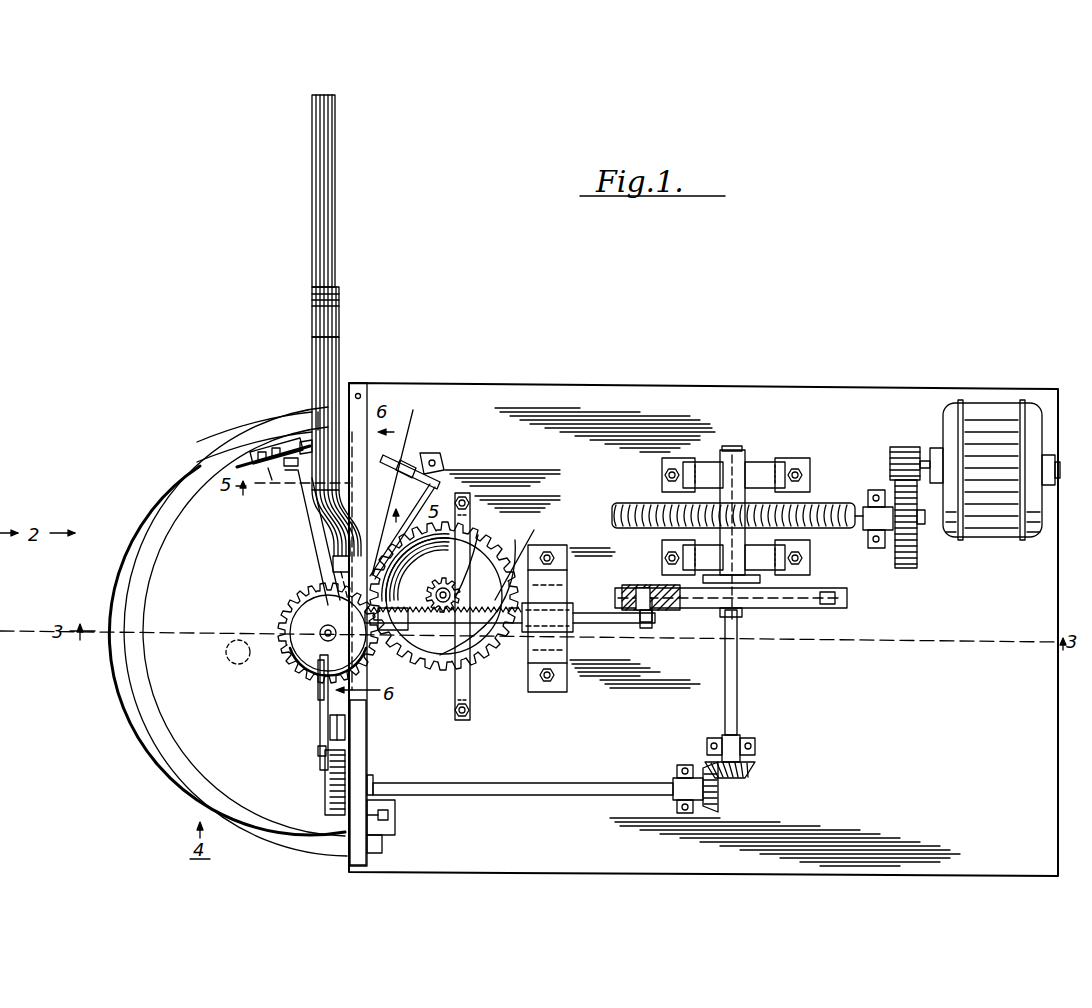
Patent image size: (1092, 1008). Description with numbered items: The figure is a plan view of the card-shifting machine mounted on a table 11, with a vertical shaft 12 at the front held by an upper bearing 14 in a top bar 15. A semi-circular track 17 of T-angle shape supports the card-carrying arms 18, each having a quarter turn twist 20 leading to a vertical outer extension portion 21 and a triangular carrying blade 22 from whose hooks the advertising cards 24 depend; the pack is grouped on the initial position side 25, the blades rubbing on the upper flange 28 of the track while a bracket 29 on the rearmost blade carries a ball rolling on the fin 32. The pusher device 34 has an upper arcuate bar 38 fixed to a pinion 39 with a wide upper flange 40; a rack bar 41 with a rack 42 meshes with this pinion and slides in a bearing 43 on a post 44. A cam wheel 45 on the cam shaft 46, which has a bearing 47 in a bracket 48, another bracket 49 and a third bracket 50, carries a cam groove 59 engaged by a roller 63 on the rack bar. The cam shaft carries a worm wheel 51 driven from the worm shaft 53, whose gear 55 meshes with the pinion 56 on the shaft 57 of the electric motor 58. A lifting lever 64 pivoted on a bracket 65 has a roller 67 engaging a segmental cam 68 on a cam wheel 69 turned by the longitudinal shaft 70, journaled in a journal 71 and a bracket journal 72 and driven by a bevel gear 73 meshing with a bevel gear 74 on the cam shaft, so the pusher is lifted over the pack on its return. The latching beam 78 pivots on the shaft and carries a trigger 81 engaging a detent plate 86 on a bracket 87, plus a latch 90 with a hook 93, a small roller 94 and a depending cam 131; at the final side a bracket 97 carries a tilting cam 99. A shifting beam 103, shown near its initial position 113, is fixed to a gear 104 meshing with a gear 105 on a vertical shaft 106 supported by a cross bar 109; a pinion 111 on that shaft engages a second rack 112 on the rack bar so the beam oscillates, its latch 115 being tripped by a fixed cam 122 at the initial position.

The table 11 is at (556, 400).
The vertical shaft 12 is at (322, 654).
The upper bearing 14 is at (320, 642).
The top bar 15 is at (358, 766).
The semi-circular track 17 is at (170, 780).
The arms 18 is at (342, 362).
The quarter turn twist 20 is at (318, 560).
The outer extension portion 21 is at (318, 374).
The triangular carrying blade 22 is at (334, 322).
The advertising cards 24 is at (332, 282).
The initial position side 25 is at (288, 408).
The upper flange 28 is at (148, 738).
The bracket 29 is at (346, 424).
The fin 32 is at (200, 805).
The pusher device 34 is at (404, 648).
The upper arcuate bar 38 is at (380, 590).
The pinion 39 is at (238, 652).
The wide upper flange 40 is at (288, 612).
The rack bar 41 is at (510, 615).
The rack 42 is at (394, 632).
The bearing 43 is at (553, 617).
The post 44 is at (556, 646).
The cam wheel 45 is at (780, 606).
The cam shaft 46 is at (736, 716).
The bearing 47 is at (800, 562).
The bracket 48 is at (705, 560).
The bracket 49 is at (740, 480).
The third bracket 50 is at (757, 752).
The worm wheel 51 is at (640, 512).
The worm shaft 53 is at (868, 512).
The gear 55 is at (917, 560).
The pinion 56 is at (900, 455).
The shaft 57 is at (925, 460).
The electric motor 58 is at (990, 396).
The cam groove 59 is at (640, 590).
The roller 63 is at (652, 616).
The lifting lever 64 is at (322, 746).
The bracket 65 is at (340, 736).
The roller 67 is at (322, 774).
The segmental cam 68 is at (328, 798).
The cam wheel 69 is at (338, 808).
The longitudinal shaft 70 is at (505, 795).
The journal 71 is at (372, 782).
The bracket journal 72 is at (680, 790).
The bevel gear 73 is at (714, 804).
The bevel gear 74 is at (746, 772).
The latching beam 78 is at (292, 498).
The trigger 81 is at (262, 440).
The detent plate 86 is at (318, 424).
The bracket 87 is at (298, 440).
The latch 90 is at (272, 474).
The hook 93 is at (237, 462).
The small roller 94 is at (258, 455).
The bracket 97 is at (394, 824).
The tilting cam 99 is at (390, 816).
The shifting beam 103 is at (428, 490).
The gear 104 is at (320, 695).
The gear 105 is at (484, 633).
The vertical shaft 106 is at (481, 558).
The cross bar 109 is at (470, 702).
The pinion 111 is at (436, 586).
The second rack 112 is at (522, 556).
The position 113 is at (415, 447).
The latch 115 is at (436, 455).
The fixed cam 122 is at (406, 483).
The depending cam 131 is at (297, 471).